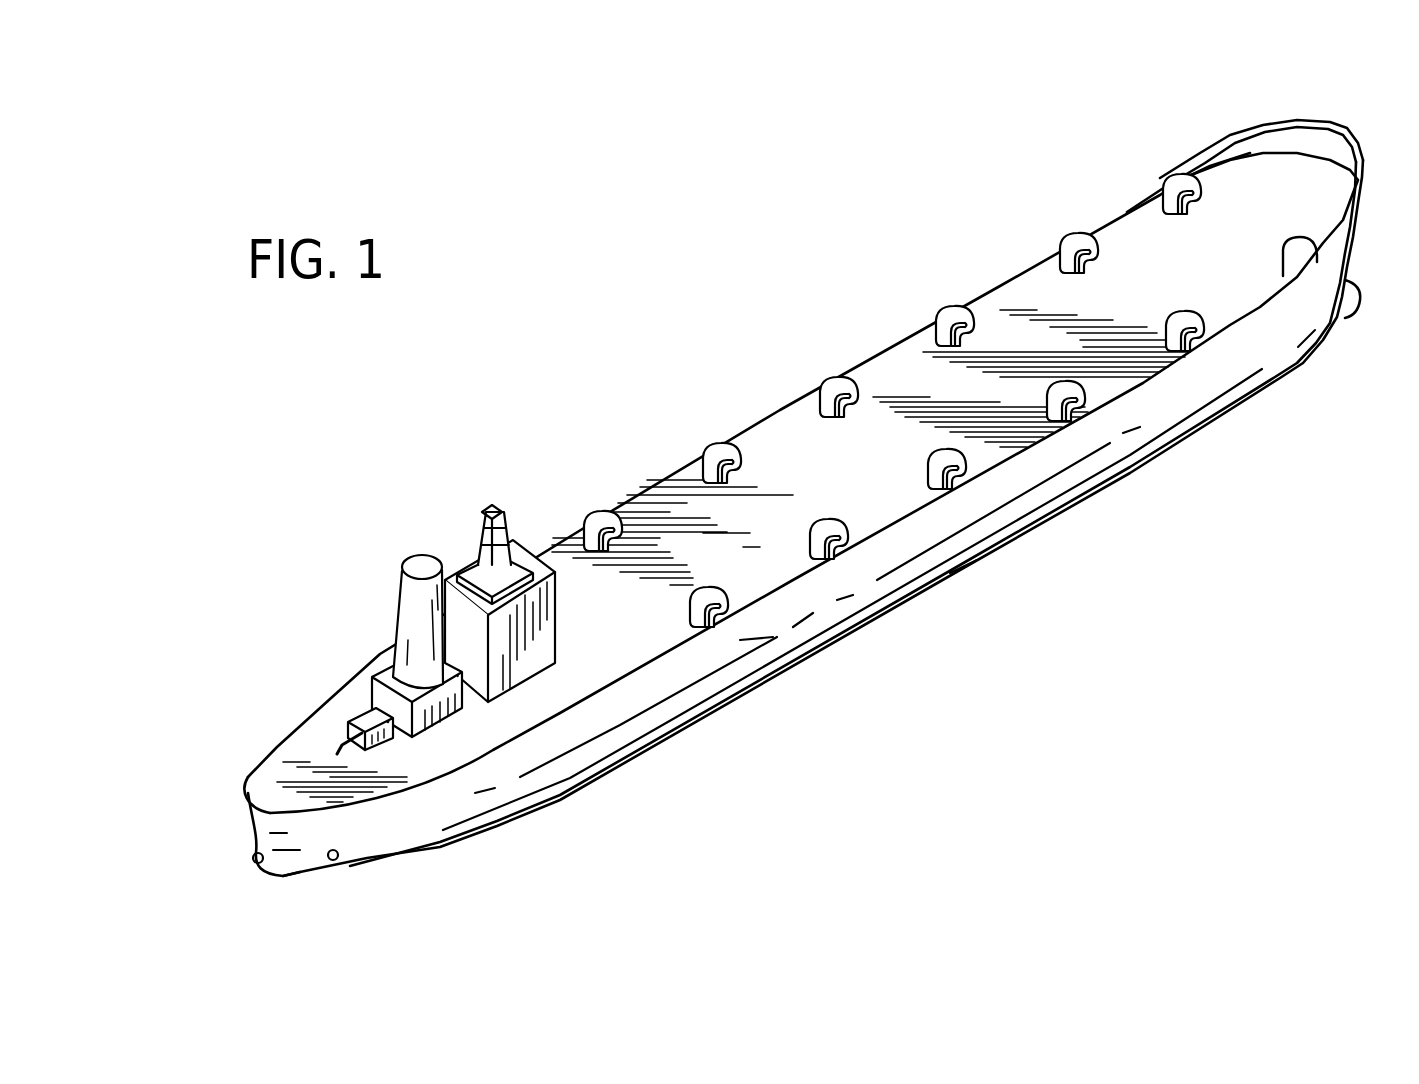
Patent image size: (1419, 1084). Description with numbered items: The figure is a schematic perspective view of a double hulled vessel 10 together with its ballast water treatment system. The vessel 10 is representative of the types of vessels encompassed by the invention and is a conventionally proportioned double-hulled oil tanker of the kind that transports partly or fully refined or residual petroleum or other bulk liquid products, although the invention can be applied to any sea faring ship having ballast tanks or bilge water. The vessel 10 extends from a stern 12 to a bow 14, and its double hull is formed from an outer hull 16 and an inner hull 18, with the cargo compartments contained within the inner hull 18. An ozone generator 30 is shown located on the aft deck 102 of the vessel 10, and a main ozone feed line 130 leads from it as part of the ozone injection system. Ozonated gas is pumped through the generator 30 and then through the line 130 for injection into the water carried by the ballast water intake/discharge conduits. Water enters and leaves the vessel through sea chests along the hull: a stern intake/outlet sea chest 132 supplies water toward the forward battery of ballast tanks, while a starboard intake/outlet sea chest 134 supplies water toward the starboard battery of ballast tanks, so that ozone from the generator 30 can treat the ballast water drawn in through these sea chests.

The vessel 10 is at (687, 373).
The stern 12 is at (277, 740).
The bow 14 is at (1342, 132).
The outer hull 16 is at (887, 610).
The inner hull 18 is at (593, 753).
The ozone generator 30 is at (352, 713).
The aft deck 102 is at (263, 777).
The main ozone feed line 130 is at (340, 743).
The stern intake/outlet sea chest 132 is at (256, 861).
The starboard intake/outlet sea chest 134 is at (338, 861).